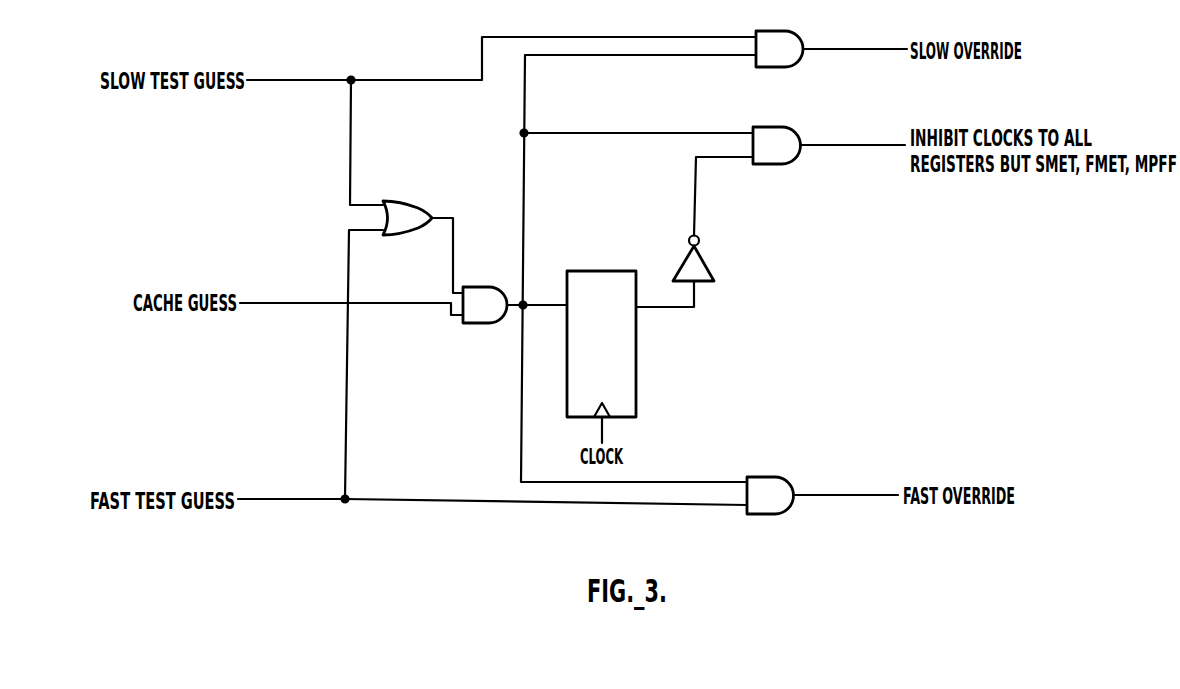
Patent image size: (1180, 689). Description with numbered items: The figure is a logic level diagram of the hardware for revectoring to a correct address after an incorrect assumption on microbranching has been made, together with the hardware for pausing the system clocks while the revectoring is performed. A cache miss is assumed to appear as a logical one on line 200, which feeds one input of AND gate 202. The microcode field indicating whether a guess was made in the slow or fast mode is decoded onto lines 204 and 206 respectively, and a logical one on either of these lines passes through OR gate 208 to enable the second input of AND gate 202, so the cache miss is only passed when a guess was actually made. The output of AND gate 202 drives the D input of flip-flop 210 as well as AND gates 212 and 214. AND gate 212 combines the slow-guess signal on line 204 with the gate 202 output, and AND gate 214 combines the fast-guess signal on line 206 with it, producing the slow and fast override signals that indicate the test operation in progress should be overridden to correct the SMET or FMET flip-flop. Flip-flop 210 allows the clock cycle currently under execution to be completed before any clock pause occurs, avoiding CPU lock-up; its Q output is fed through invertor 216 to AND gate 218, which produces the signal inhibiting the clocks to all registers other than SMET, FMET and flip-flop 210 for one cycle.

The line 200 is at (258, 303).
The AND gate 202 is at (478, 287).
The line 204 is at (276, 80).
The line 206 is at (255, 499).
The OR gate 208 is at (414, 203).
The flip-flop 210 is at (620, 271).
The AND gate 212 is at (806, 23).
The AND gate 214 is at (773, 477).
The invertor 216 is at (706, 258).
The AND gate 218 is at (783, 127).